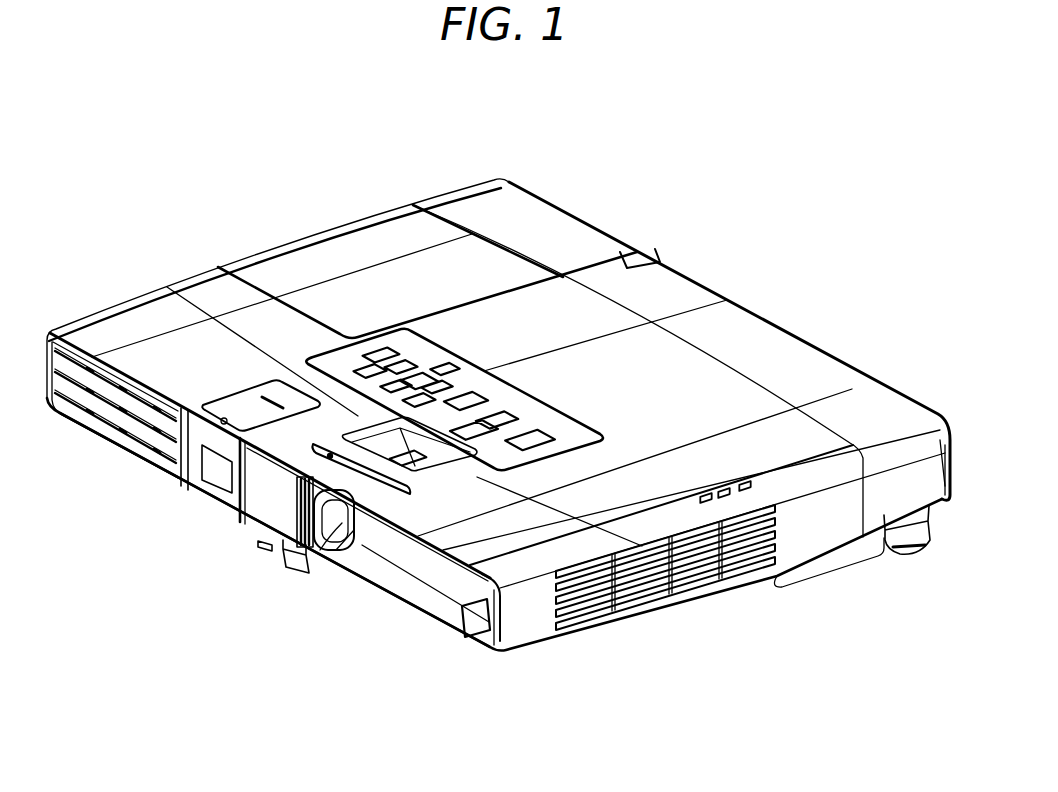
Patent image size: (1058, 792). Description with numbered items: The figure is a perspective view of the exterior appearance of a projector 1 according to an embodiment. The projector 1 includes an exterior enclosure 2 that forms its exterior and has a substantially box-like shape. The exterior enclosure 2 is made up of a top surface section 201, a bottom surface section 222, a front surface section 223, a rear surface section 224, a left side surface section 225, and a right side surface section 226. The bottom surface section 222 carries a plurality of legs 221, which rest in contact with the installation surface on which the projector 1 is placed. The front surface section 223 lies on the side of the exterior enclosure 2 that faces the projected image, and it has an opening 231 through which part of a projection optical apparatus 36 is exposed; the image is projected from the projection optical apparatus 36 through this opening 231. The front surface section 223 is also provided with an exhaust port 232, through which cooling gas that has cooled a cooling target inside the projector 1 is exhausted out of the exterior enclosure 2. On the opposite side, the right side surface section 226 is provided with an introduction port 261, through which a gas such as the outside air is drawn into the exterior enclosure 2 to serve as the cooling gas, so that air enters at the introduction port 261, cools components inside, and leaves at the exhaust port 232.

The projector 1 is at (771, 171).
The exterior enclosure 2 is at (601, 224).
The top surface section 201 is at (773, 352).
The rear surface section 224 is at (897, 388).
The left side surface section 225 is at (303, 235).
The exhaust port 232 is at (173, 460).
The front surface section 223 is at (253, 493).
The legs 221 is at (287, 570).
The projection optical apparatus 36 is at (340, 525).
The opening 231 is at (350, 545).
The bottom surface section 222 is at (609, 636).
The introduction port 261 is at (750, 565).
The right side surface section 226 is at (818, 527).